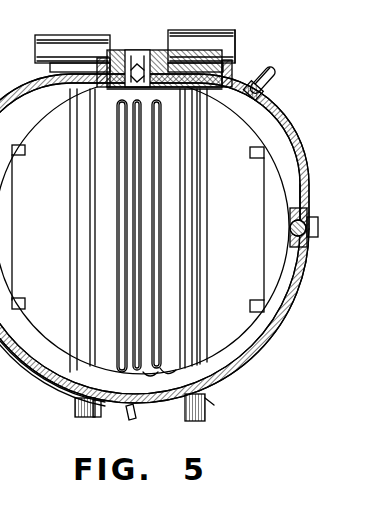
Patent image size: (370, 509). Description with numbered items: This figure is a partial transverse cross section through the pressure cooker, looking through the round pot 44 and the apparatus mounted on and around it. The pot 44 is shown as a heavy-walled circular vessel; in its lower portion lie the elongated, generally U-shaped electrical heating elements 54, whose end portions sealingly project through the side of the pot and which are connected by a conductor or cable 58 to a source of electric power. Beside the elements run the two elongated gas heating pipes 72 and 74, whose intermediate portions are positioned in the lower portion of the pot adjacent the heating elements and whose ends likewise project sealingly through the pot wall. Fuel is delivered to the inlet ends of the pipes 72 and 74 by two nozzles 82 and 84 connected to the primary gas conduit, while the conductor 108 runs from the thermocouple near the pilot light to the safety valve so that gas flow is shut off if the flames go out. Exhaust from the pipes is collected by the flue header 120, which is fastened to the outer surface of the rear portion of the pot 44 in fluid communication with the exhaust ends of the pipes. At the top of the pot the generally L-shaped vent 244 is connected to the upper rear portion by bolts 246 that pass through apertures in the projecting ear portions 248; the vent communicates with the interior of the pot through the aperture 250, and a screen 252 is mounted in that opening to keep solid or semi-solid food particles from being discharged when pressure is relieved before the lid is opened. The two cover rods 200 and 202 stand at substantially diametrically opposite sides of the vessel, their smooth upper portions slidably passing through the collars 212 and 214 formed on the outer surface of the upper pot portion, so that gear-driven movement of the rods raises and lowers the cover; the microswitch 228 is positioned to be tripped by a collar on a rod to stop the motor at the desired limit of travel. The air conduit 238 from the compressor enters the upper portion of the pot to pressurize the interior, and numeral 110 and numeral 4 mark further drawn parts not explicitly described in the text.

The pot 44 is at (230, 380).
The rod 200 is at (0, 236).
The microswitch 228 is at (302, 246).
The collar 212 is at (0, 210).
The collar 214 is at (289, 222).
The rod 202 is at (291, 236).
The air conduit 238 is at (272, 78).
The ear portion 248 is at (100, 60).
The flue header 120 is at (232, 38).
The vent 244 is at (112, 50).
The aperture 250 is at (140, 50).
The bolt 246 is at (100, 58).
The screen 252 is at (143, 87).
The gas heating pipe 72 is at (77, 172).
The gas heating pipe 74 is at (198, 179).
The heating element 54 is at (160, 372).
The nozzle 82 is at (75, 414).
The conductor 108 is at (98, 414).
The conductor 58 is at (130, 414).
The nozzle 84 is at (186, 418).
The leg brace 110 is at (215, 402).
The saddle 4 is at (3, 361).